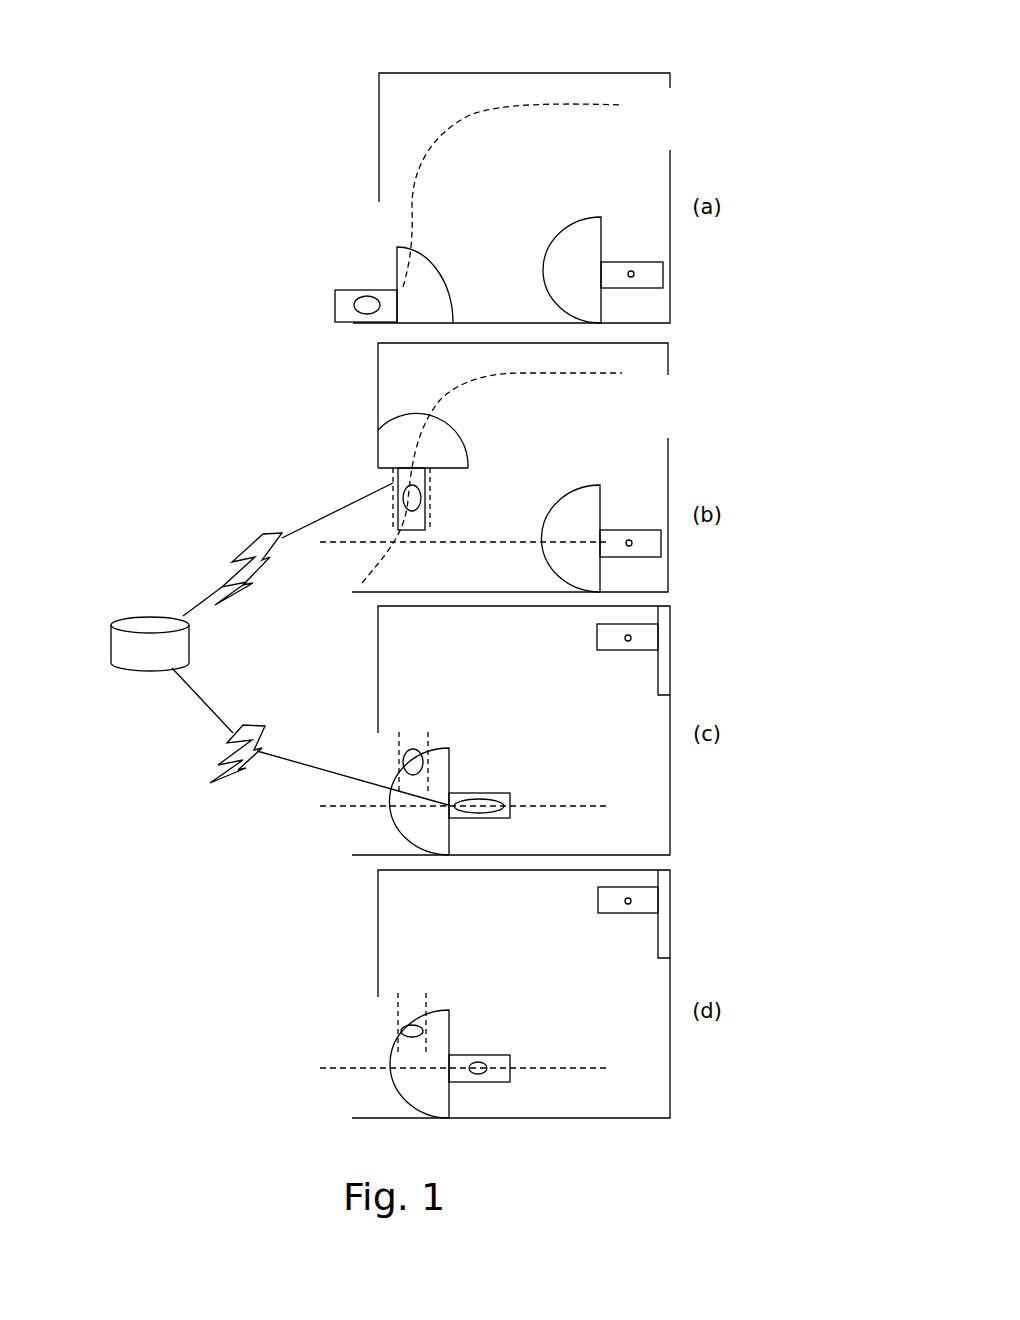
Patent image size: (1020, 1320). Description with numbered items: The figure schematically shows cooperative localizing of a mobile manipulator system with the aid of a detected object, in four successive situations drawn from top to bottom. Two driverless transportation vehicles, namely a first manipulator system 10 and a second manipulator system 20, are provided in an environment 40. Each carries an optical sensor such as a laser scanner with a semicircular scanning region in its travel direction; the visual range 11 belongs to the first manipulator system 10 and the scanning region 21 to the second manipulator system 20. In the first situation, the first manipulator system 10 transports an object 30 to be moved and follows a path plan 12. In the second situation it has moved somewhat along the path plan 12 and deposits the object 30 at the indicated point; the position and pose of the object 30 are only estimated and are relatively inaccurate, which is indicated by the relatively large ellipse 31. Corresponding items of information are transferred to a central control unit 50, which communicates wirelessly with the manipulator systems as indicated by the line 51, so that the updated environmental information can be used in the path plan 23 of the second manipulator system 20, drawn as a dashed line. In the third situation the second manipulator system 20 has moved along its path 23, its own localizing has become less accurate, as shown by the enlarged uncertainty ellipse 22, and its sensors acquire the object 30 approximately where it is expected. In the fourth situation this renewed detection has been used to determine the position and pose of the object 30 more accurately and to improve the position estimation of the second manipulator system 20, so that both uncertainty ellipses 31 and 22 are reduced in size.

The first manipulator system 10 is at (330, 299).
The visual range of sensors 11 is at (396, 247).
The path plan 12 is at (570, 104).
The second manipulator system 20 is at (666, 270).
The scanning region 21 is at (600, 217).
The uncertainty ellipse 22 is at (634, 276).
The path plan 23 is at (485, 542).
The object 30 is at (336, 290).
The ellipse 31 is at (368, 305).
The environment 40 is at (503, 83).
The central control unit 50 is at (143, 612).
The line 51 is at (292, 530).